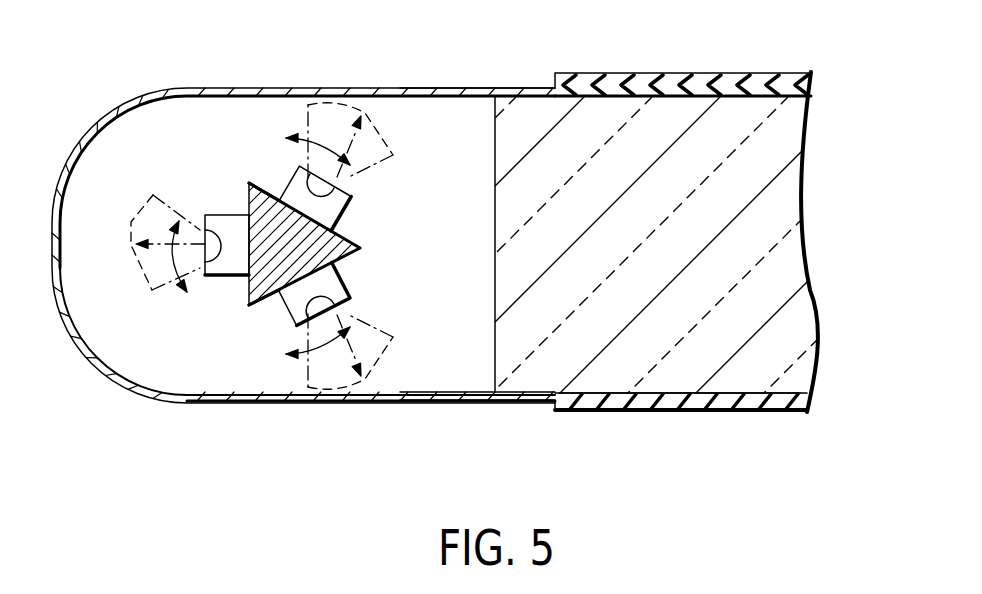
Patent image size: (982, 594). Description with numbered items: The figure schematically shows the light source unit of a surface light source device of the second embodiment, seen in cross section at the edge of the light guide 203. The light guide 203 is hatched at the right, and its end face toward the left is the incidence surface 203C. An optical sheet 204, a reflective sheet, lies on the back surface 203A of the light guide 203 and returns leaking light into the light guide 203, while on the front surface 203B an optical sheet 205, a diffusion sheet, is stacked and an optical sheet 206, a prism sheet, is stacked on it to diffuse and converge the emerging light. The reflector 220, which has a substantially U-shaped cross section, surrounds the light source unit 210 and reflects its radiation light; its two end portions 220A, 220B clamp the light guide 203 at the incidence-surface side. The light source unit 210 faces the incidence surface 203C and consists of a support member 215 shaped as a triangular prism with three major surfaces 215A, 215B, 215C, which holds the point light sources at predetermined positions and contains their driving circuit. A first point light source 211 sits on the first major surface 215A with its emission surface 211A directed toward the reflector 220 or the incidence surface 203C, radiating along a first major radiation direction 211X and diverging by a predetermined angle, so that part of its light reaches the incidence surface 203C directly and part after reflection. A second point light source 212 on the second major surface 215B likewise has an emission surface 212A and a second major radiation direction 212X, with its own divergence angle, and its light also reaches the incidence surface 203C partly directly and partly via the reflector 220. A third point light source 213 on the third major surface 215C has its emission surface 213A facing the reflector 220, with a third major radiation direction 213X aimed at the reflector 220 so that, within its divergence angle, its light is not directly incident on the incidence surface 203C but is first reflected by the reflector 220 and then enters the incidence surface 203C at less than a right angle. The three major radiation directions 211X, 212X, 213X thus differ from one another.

The light guide 203 is at (773, 200).
The back surface of light guide 203A is at (664, 409).
The front surface of light guide 203B is at (705, 74).
The incidence surface 203C is at (495, 352).
The optical sheet 204 is at (755, 412).
The optical sheet 205 is at (809, 96).
The optical sheet 206 is at (811, 76).
The light source unit 210 is at (267, 253).
The first point light source 211 is at (350, 213).
The emission surface 211A is at (344, 181).
The first major radiation direction 211X is at (378, 137).
The second point light source 212 is at (349, 270).
The emission surface 212A is at (348, 310).
The second major radiation direction 212X is at (388, 337).
The third point light source 213 is at (218, 215).
The emission surface 213A is at (205, 222).
The third major radiation direction 213X is at (131, 223).
The support member 215 is at (248, 303).
The first major surface 215A is at (262, 190).
The second major surface 215B is at (268, 292).
The third major surface 215C is at (246, 286).
The reflector 220 is at (216, 88).
The end portion of reflector 220A is at (520, 395).
The end portion of reflector 220B is at (512, 89).